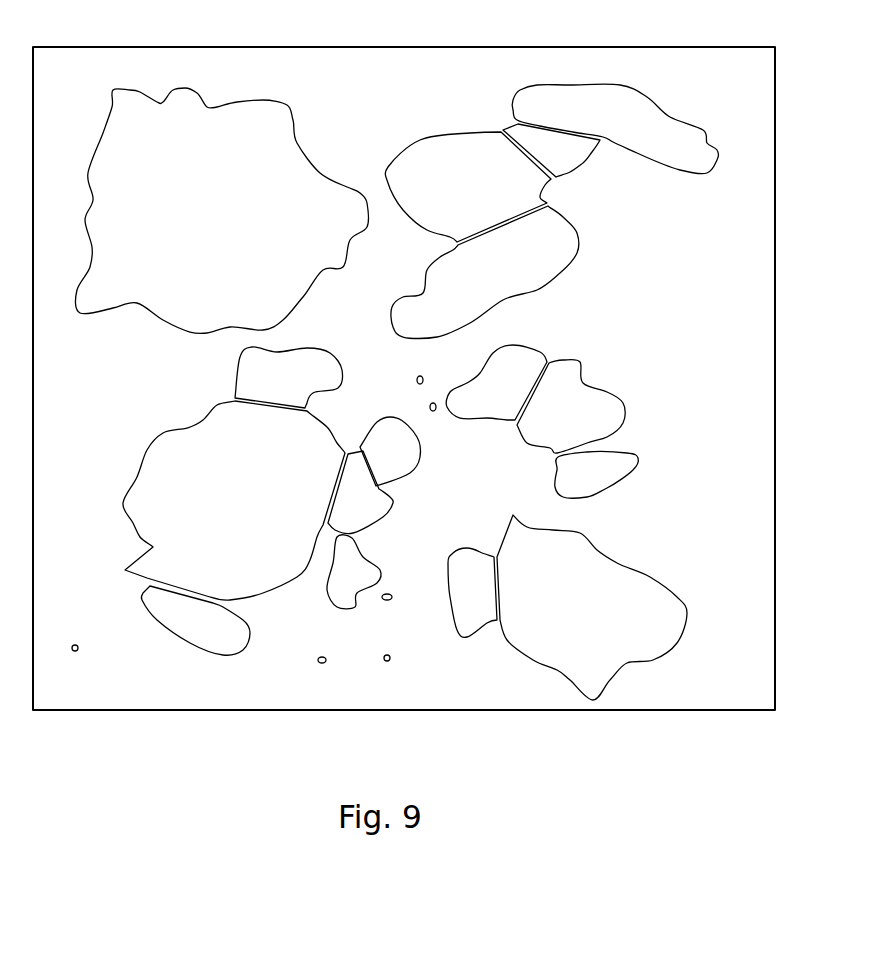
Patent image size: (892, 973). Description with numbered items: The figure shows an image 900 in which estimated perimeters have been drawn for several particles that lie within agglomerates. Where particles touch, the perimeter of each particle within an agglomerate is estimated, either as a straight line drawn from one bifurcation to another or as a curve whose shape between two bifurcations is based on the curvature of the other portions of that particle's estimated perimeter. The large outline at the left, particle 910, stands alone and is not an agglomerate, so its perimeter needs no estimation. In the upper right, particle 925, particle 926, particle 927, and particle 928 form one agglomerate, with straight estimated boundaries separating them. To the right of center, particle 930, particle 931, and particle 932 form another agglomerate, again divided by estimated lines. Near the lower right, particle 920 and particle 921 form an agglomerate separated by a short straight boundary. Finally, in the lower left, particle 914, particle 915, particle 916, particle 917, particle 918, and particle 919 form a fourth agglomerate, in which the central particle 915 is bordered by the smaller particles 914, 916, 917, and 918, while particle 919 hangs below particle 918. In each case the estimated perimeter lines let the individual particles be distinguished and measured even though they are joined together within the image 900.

The image of sample 900 is at (692, 65).
The particle 910 is at (160, 208).
The particle 914 is at (176, 634).
The particle 915 is at (196, 508).
The particle 916 is at (251, 393).
The particle 917 is at (370, 468).
The particle 918 is at (336, 521).
The particle 919 is at (333, 583).
The particle 920 is at (565, 614).
The particle 921 is at (456, 609).
The particle 925 is at (601, 121).
The particle 926 is at (543, 164).
The particle 927 is at (438, 196).
The particle 928 is at (485, 273).
The particle 930 is at (478, 409).
The particle 931 is at (560, 431).
The particle 932 is at (572, 489).